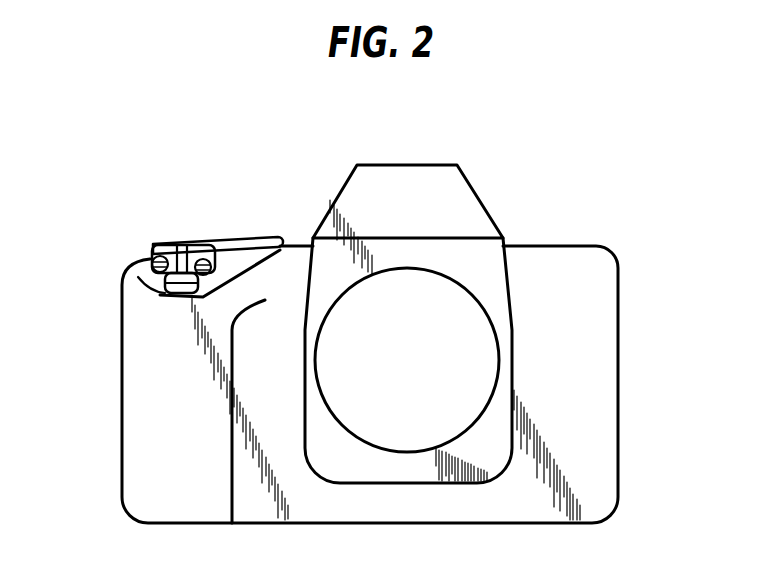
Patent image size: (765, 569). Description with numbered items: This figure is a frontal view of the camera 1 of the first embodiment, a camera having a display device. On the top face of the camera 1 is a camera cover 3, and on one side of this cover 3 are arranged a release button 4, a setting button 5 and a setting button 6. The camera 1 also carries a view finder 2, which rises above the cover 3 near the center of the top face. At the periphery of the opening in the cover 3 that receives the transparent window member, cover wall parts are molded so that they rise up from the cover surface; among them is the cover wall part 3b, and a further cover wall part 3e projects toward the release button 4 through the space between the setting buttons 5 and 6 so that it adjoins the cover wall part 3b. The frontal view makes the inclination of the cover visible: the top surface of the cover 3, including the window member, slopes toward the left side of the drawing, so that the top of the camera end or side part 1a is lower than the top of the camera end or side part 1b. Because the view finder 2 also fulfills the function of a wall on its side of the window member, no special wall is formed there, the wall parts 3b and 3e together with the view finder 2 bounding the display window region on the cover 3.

The camera 1 is at (112, 415).
The camera end or side part 1a is at (122, 385).
The camera end or side part 1b is at (618, 376).
The view finder 2 is at (343, 190).
The camera cover 3 is at (140, 265).
The cover wall part 3b is at (260, 241).
The cover wall part 3e is at (178, 247).
The release button 4 is at (186, 293).
The setting button 5 is at (161, 247).
The setting button 6 is at (211, 250).